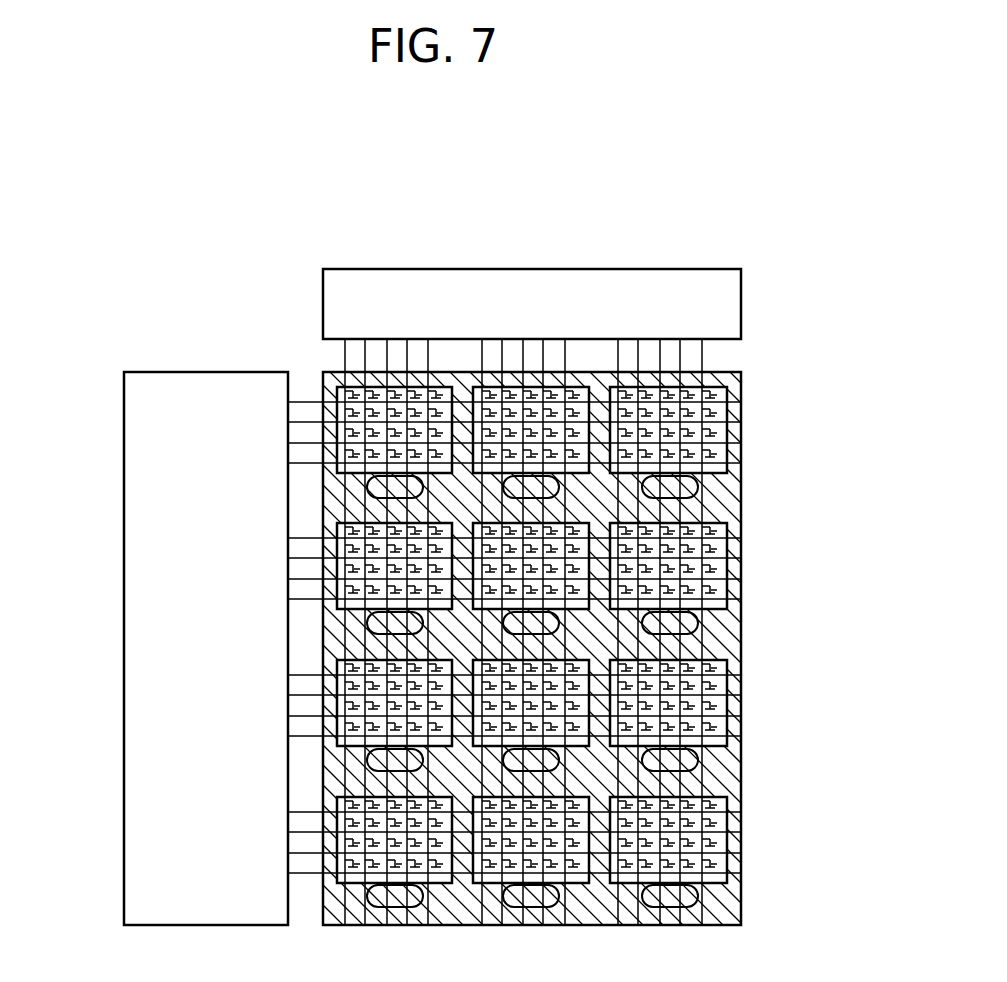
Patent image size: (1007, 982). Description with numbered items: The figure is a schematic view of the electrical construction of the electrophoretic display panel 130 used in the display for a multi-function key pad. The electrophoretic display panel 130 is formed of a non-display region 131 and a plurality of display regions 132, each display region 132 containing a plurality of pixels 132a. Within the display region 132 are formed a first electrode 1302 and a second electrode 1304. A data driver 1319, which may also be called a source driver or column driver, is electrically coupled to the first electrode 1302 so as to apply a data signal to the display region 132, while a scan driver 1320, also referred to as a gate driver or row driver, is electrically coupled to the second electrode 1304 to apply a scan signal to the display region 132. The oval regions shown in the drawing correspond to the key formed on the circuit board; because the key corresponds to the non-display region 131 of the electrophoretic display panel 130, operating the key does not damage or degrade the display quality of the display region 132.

The electrophoretic display panel 130 is at (503, 603).
The non-display region 131 is at (725, 497).
The display region 132 is at (725, 427).
The pixel 132a is at (727, 452).
The first electrode 1302 is at (340, 355).
The second electrode 1304 is at (302, 400).
The data driver 1319 is at (531, 268).
The scan driver 1320 is at (123, 648).